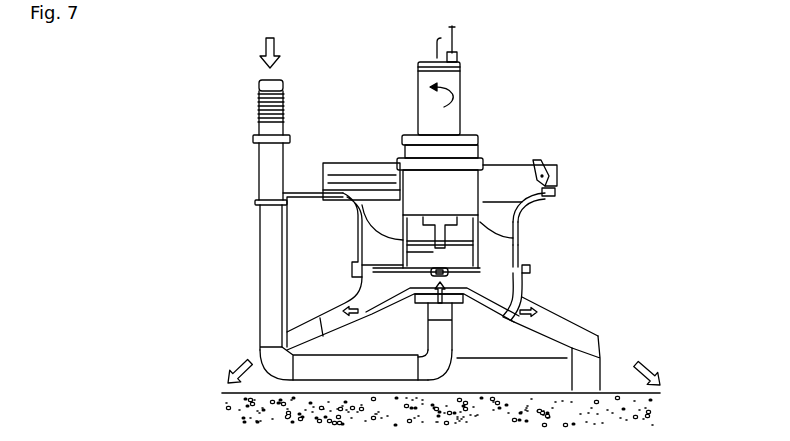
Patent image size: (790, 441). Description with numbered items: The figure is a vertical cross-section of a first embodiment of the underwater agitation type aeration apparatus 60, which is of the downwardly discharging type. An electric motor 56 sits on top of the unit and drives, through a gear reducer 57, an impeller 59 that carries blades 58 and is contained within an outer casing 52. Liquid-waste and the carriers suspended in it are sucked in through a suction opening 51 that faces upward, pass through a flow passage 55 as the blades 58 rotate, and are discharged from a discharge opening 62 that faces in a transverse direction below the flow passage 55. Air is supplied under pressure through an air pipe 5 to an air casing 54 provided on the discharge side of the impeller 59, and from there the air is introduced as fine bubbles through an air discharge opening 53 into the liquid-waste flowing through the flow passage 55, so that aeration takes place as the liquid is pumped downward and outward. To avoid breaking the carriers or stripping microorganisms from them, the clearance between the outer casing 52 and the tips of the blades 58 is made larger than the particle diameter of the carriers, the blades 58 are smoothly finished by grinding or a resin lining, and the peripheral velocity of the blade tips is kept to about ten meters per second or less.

The air pipe 5 is at (268, 284).
The suction opening 51 is at (503, 183).
The outer casing 52 is at (540, 215).
The air discharge opening 53 is at (540, 300).
The air casing 54 is at (522, 286).
The flow passage 55 is at (540, 235).
The electric motor 56 is at (451, 113).
The gear reducer 57 is at (453, 199).
The blades 58 is at (535, 258).
The impeller 59 is at (420, 258).
The aeration apparatus 60 is at (622, 152).
The discharge opening 62 is at (593, 341).